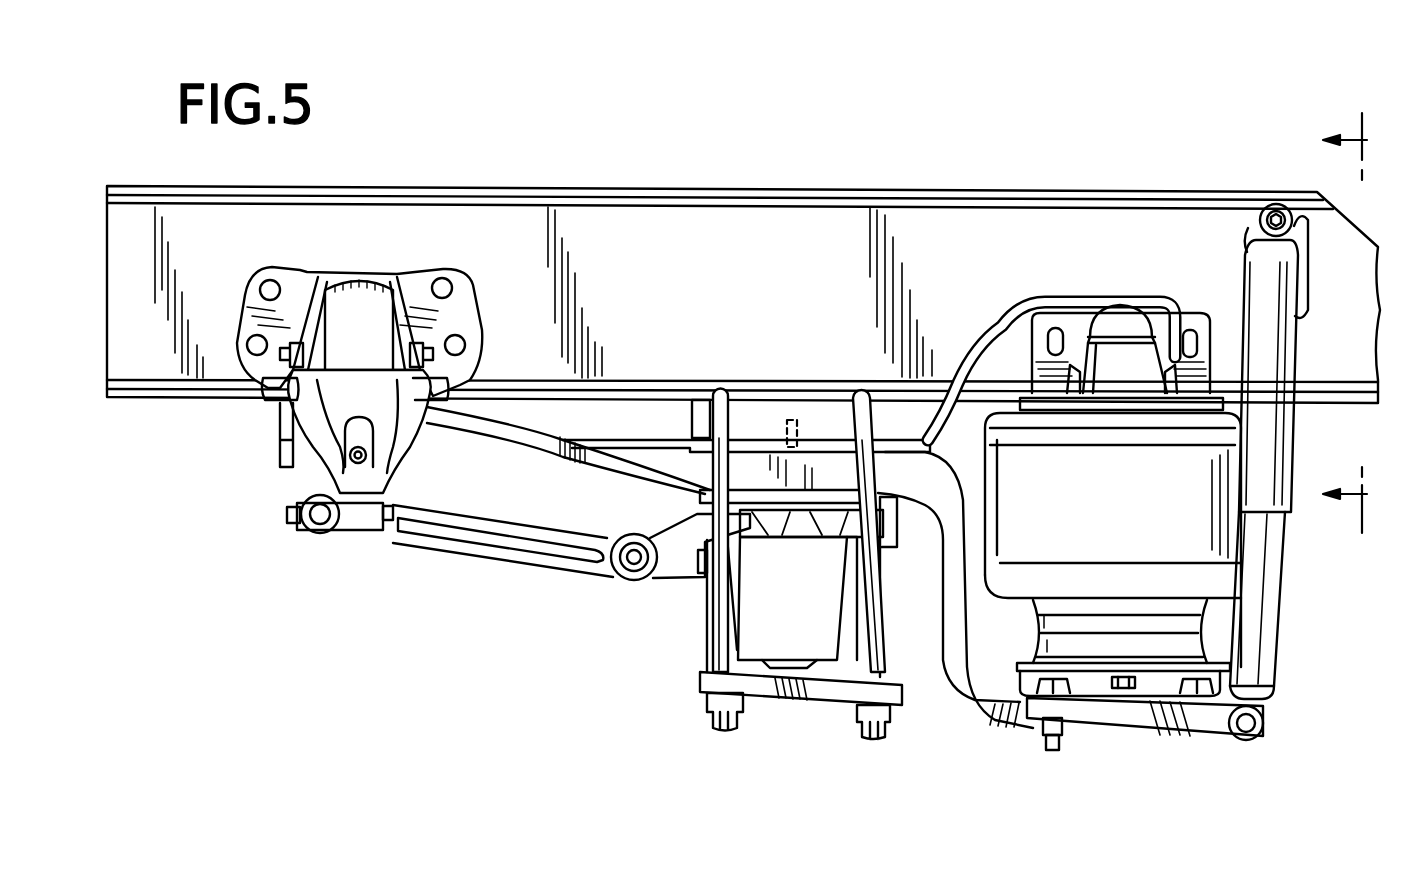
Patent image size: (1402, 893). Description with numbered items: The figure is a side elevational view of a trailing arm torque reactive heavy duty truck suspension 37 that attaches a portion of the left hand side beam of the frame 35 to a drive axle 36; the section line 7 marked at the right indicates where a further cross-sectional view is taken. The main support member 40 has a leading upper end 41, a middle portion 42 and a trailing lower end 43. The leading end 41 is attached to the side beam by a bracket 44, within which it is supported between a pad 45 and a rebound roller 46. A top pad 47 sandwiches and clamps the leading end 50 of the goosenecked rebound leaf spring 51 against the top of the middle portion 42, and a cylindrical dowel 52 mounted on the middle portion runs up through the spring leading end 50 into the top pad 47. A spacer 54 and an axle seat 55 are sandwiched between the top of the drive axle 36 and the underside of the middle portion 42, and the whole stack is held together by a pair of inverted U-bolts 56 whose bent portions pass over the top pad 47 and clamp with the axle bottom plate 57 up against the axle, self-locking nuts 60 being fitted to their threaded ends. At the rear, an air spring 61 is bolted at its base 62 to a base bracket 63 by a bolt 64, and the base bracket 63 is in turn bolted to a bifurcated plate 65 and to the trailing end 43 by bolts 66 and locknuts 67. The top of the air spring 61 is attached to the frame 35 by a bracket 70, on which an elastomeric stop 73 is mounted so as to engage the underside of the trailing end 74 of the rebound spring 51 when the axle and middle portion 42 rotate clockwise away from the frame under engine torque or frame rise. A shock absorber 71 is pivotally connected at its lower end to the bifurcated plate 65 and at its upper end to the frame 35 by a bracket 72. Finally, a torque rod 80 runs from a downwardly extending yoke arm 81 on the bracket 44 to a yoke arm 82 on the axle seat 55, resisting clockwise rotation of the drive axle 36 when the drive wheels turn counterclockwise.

The section line 7- 7 is at (1345, 327).
The frame 35 is at (632, 186).
The drive axle 36 is at (740, 598).
The trailing arm air suspension 37 is at (578, 718).
The main support member 40 is at (962, 723).
The leading upper end 41 is at (453, 432).
The middle portion 42 is at (886, 525).
The trailing lower end 43 is at (1063, 723).
The bracket 44 is at (238, 352).
The pad 45 is at (265, 388).
The rebound roller 46 is at (347, 453).
The top pad 47 is at (700, 424).
The leading end of the rebound leaf spring 50 is at (692, 443).
The rebound leaf spring 51 is at (956, 410).
The cylindrical dowel 52 is at (795, 420).
The spacer 54 is at (712, 500).
The axle seat 55 is at (670, 522).
The inverted U-bolts 56 is at (713, 634).
The axle bottom plate 57 is at (693, 681).
The self-locking nuts 60 is at (740, 718).
The air spring 61 is at (983, 550).
The base 62 is at (1032, 645).
The base bracket 63 is at (1020, 683).
The bolt 64 is at (1127, 692).
The bifurcated plate 65 is at (1231, 741).
The bolts 66 is at (1052, 752).
The locknuts 67 is at (1042, 735).
The bracket 70 is at (1200, 313).
The shock absorber 71 is at (1292, 450).
The bracket 72 is at (1258, 222).
The elastomeric stop 73 is at (1102, 307).
The trailing end of the rebound spring 74 is at (1037, 295).
The torque rod 80 is at (450, 555).
The yoke arm 81 is at (362, 530).
The yoke arm 82 is at (668, 580).